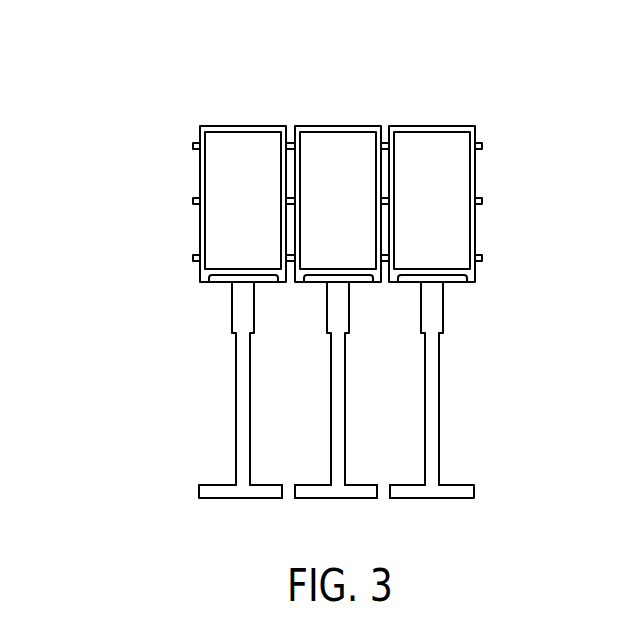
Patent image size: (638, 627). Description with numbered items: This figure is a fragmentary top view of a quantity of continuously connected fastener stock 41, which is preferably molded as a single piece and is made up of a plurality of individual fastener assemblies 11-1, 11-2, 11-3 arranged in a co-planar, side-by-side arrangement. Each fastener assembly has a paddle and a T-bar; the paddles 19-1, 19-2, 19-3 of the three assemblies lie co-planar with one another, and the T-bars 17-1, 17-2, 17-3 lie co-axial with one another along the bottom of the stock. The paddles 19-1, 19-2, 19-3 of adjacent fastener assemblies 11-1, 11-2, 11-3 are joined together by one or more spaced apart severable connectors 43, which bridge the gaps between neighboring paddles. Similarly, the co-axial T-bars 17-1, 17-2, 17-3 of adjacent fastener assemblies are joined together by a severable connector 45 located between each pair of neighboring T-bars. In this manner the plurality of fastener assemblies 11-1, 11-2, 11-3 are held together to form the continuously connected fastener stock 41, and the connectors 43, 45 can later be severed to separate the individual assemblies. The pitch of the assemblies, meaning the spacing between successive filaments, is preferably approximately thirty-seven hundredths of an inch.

The fastener assembly 11-1 is at (251, 245).
The fastener assembly 11-2 is at (350, 245).
The fastener assembly 11-3 is at (445, 245).
The T-bar 17-1 is at (240, 498).
The T-bar 17-2 is at (336, 498).
The T-bar 17-3 is at (431, 498).
The paddle 19-1 is at (284, 283).
The paddle 19-2 is at (378, 283).
The paddle 19-3 is at (472, 283).
The continuously connected fastener stock 41 is at (279, 282).
The severable connector 43 is at (291, 141).
The severable connector 45 is at (289, 484).